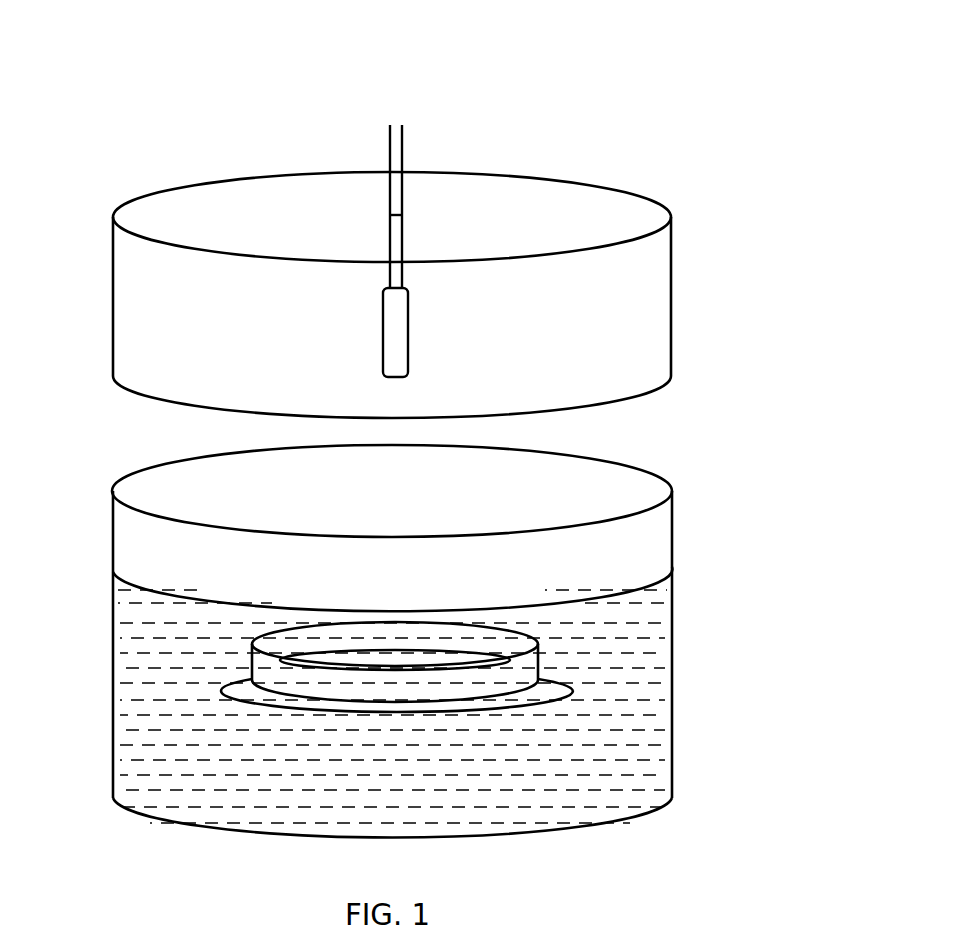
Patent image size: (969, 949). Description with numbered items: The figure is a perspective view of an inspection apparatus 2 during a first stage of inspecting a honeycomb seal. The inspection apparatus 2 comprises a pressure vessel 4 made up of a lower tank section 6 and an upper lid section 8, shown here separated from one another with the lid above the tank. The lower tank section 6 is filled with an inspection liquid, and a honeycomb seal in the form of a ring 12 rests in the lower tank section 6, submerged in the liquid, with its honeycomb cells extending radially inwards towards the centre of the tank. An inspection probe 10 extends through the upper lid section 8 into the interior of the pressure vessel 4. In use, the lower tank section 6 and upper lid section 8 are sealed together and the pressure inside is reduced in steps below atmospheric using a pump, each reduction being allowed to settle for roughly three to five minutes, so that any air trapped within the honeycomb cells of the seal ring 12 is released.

The inspection apparatus 2 is at (683, 98).
The pressure vessel 4 is at (713, 403).
The lower tank section 6 is at (101, 697).
The upper lid section 8 is at (101, 296).
The inspection probe 10 is at (397, 125).
The seal ring 12 is at (237, 680).